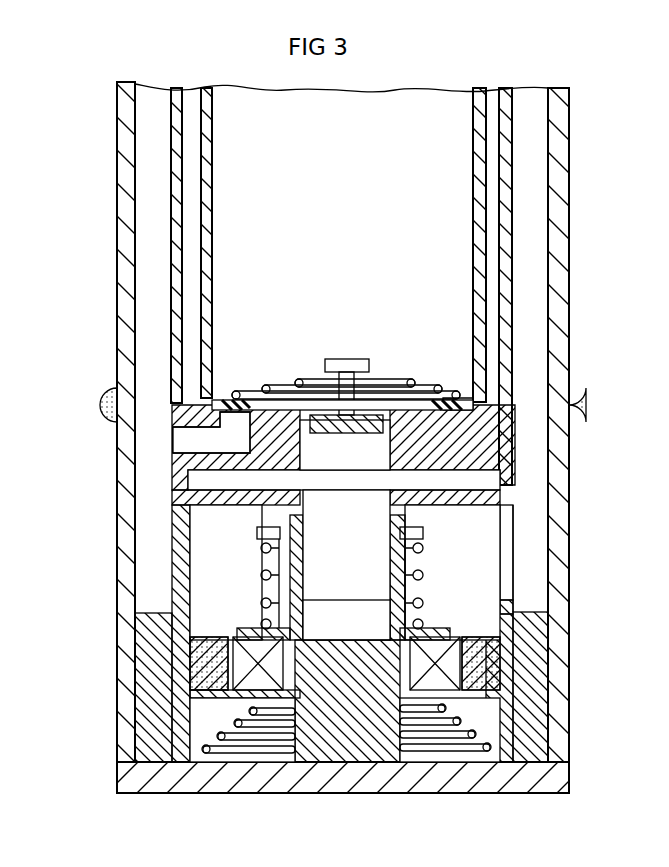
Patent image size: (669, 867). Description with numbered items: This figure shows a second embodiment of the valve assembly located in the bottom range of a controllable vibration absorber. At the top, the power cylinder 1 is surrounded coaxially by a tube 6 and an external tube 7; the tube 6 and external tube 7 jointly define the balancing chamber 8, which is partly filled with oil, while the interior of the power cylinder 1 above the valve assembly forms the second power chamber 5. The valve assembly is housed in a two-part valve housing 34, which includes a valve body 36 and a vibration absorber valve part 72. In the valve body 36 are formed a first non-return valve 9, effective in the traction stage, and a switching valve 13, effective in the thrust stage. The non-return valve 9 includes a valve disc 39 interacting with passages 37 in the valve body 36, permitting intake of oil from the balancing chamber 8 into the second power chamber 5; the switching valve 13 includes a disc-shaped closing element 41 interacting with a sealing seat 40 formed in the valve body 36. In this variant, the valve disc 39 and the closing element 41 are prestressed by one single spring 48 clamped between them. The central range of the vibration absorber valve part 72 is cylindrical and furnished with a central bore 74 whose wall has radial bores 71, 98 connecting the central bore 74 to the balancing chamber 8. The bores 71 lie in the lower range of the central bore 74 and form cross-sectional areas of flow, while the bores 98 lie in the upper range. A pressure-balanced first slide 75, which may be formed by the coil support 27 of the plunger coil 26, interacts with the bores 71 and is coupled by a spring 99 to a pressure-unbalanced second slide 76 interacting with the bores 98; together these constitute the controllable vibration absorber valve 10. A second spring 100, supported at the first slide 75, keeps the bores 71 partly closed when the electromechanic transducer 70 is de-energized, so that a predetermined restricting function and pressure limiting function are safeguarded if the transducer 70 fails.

The power cylinder 1 is at (478, 97).
The second power chamber 5 is at (230, 105).
The tube 6 is at (505, 95).
The external tube 7 is at (554, 98).
The balancing chamber 8 is at (150, 100).
The non-return valve 9 is at (243, 398).
The controllable vibration absorber valve 10 is at (244, 552).
The switching valve 13 is at (340, 446).
The plunger coil 26 is at (444, 660).
The coil support 27 is at (440, 728).
The valve housing 34 is at (516, 483).
The valve body 36 is at (458, 455).
The passages 37 is at (232, 430).
The valve disc 39 is at (447, 413).
The sealing seat 40 is at (390, 405).
The disc-shaped closing element 41 is at (323, 412).
The spring 48 is at (278, 387).
The electromechanic transducer 70 is at (232, 697).
The radial bores 71 is at (300, 620).
The vibration absorber valve part 72 is at (354, 748).
The central bore 74 is at (313, 576).
The first slide 75 is at (444, 604).
The second slide 76 is at (429, 547).
The radial bores 98 is at (405, 524).
The spring 99 is at (262, 578).
The second spring 100 is at (254, 733).